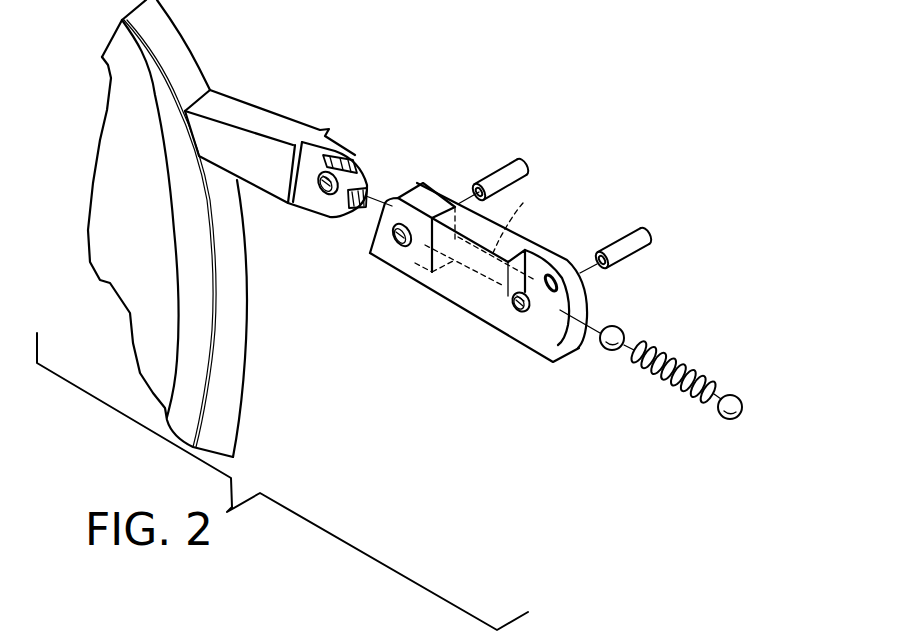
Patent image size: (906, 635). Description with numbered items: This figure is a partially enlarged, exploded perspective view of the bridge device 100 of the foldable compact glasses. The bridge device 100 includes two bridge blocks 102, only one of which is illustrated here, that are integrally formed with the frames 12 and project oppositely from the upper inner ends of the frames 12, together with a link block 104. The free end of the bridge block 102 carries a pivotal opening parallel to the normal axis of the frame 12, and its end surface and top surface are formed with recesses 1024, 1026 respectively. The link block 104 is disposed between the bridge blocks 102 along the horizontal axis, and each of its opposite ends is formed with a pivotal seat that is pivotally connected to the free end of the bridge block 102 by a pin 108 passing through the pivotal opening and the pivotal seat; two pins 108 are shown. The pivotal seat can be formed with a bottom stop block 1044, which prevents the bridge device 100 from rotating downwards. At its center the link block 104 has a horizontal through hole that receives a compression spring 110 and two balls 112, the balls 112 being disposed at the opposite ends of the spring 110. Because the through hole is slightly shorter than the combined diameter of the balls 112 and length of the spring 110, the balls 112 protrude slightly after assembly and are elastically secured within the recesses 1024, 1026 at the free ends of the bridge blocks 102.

The frame 12 is at (190, 63).
The bridge device 100 is at (553, 80).
The bridge block 102 is at (268, 117).
The recess 1026 is at (343, 153).
The recess 1024 is at (367, 190).
The link block 104 is at (453, 292).
The bottom stop block 1044 is at (570, 340).
The pin 108 is at (525, 171).
The compression spring 110 is at (682, 360).
The ball 112 is at (616, 327).